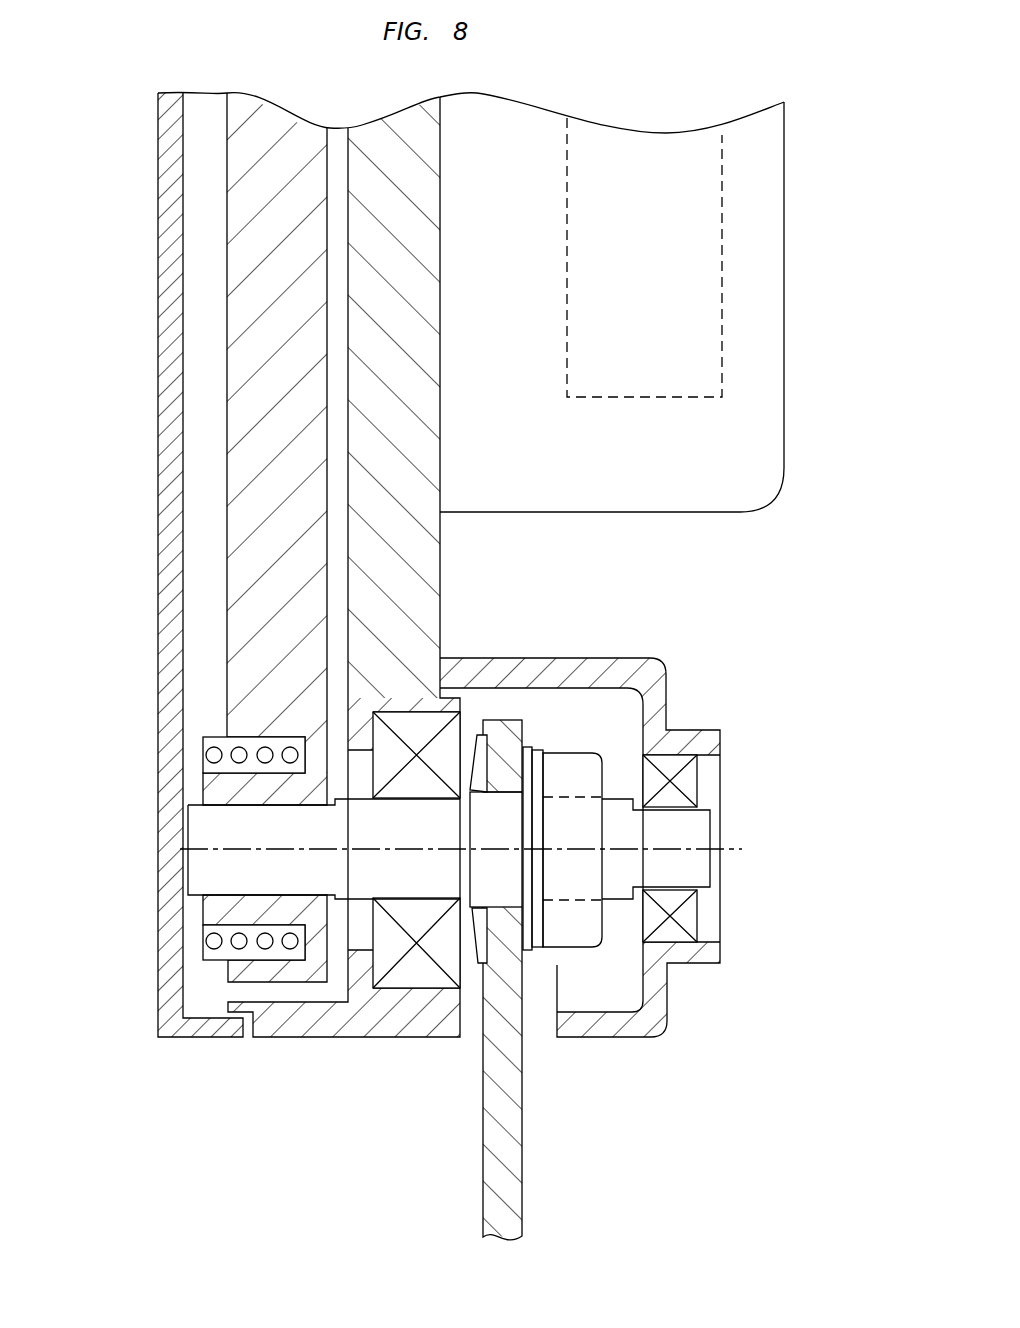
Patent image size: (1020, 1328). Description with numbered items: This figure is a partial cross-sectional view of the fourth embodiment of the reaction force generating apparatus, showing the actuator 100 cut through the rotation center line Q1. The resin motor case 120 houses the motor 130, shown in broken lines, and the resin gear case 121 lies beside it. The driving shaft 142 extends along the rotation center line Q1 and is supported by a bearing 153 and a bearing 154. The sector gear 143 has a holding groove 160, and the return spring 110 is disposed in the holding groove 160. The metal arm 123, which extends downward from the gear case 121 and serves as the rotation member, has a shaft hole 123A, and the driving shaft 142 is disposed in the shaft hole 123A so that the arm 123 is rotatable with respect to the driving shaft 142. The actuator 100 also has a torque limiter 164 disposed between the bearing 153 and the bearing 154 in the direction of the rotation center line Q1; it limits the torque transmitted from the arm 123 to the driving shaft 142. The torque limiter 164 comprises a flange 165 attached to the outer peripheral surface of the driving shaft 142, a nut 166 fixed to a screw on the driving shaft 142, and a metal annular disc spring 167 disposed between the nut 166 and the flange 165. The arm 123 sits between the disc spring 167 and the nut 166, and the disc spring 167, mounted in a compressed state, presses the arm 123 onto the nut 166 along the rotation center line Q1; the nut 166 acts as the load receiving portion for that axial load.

The actuator 100 is at (204, 1075).
The return spring 110 is at (196, 752).
The motor case 120 is at (730, 449).
The gear case 121 is at (158, 577).
The arm 123 is at (510, 1218).
The shaft hole 123A is at (528, 935).
The motor 130 is at (732, 268).
The driving shaft 142 is at (181, 832).
The sector gear 143 is at (232, 395).
The bearing 153 is at (697, 912).
The bearing 154 is at (428, 980).
The holding groove 160 is at (232, 955).
The torque limiter 164 is at (532, 698).
The flange 165 is at (480, 740).
The nut 166 is at (577, 760).
The annular disc spring 167 is at (473, 963).
The rotation center line Q1 is at (752, 848).